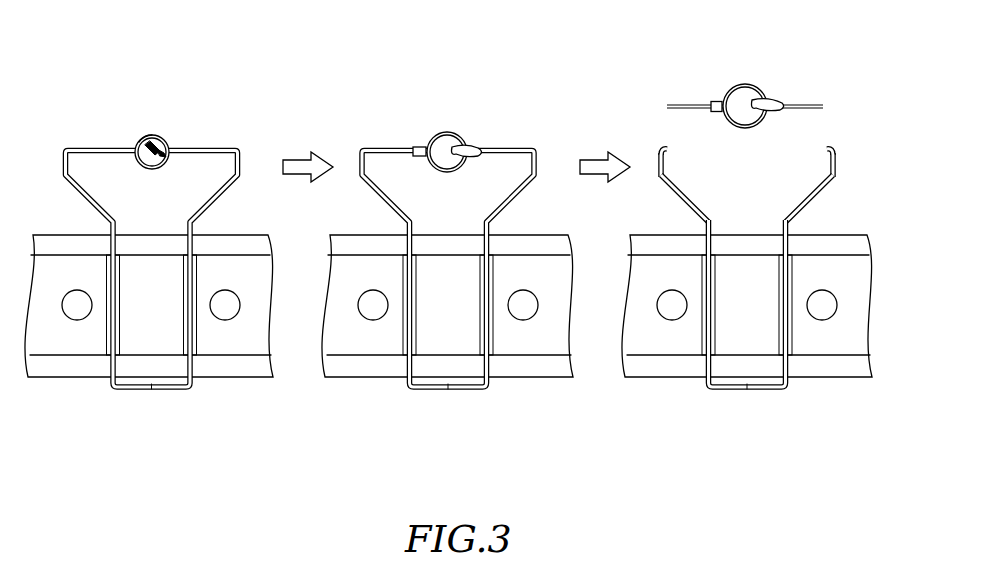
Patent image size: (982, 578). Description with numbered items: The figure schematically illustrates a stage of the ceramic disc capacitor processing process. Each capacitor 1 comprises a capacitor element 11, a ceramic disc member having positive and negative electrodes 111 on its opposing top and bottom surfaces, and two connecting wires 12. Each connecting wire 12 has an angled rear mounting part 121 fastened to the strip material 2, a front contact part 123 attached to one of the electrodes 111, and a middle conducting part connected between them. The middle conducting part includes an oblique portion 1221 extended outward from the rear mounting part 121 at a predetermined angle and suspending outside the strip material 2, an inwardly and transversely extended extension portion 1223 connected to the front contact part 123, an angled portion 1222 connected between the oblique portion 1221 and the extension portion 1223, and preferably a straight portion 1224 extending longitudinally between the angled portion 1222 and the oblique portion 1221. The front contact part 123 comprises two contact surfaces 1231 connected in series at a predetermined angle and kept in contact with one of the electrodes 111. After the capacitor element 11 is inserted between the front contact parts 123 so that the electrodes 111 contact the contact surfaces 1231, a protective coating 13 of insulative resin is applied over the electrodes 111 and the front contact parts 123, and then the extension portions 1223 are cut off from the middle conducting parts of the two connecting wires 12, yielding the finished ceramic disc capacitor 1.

The capacitor 1 is at (733, 72).
The capacitor element 11 is at (147, 172).
The positive and negative electrodes 111 is at (138, 144).
The connecting wire 12 is at (782, 264).
The angled rear mounting part 121 is at (706, 366).
The oblique portion 1221 is at (811, 200).
The angled portion 1222 is at (832, 153).
The inwardly and transversely extended extension portion 1223 is at (807, 103).
The straight portion 1224 is at (835, 172).
The front contact part 123 is at (183, 88).
The contact surfaces 1231 is at (164, 150).
The protective coating 13 is at (447, 140).
The strip material 2 is at (530, 366).